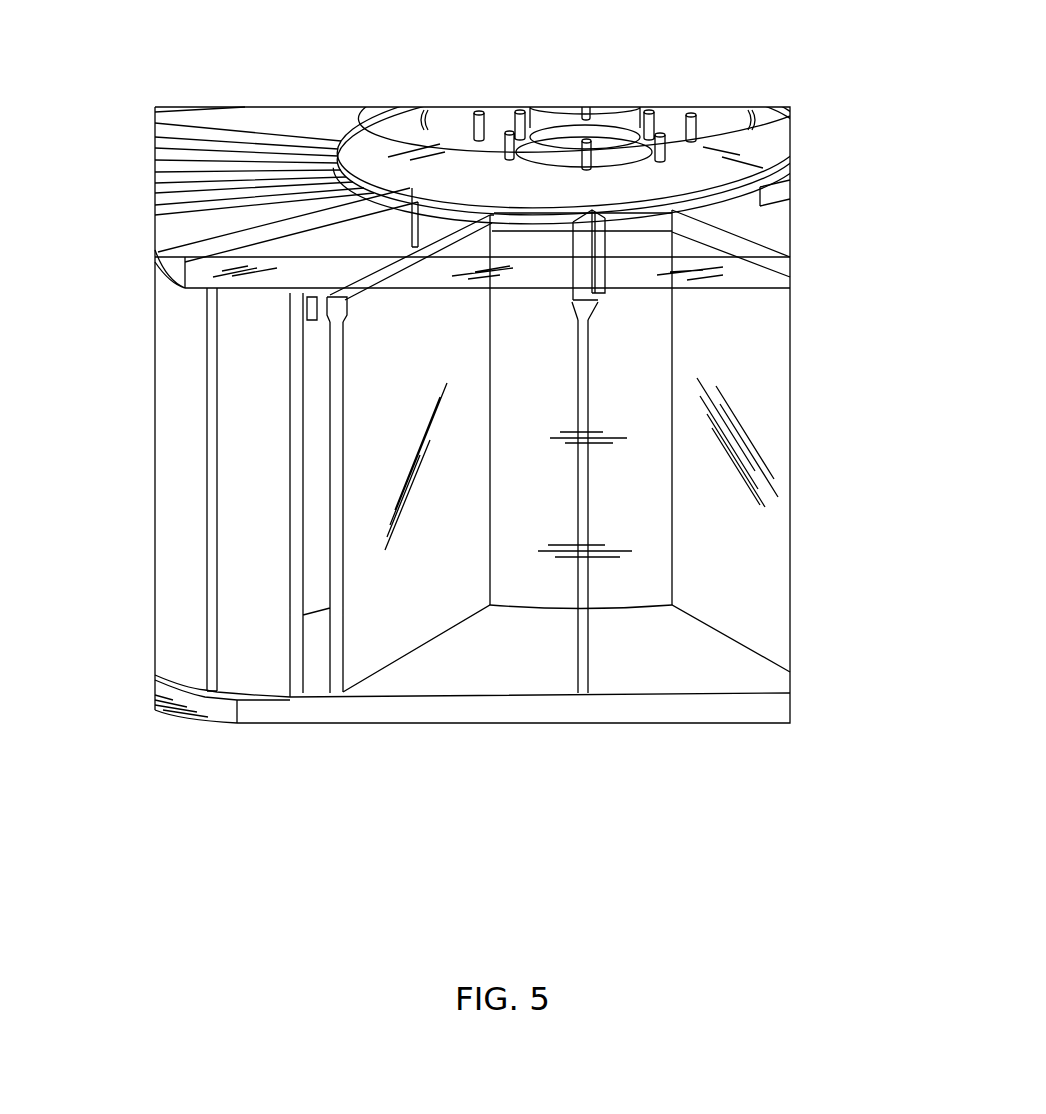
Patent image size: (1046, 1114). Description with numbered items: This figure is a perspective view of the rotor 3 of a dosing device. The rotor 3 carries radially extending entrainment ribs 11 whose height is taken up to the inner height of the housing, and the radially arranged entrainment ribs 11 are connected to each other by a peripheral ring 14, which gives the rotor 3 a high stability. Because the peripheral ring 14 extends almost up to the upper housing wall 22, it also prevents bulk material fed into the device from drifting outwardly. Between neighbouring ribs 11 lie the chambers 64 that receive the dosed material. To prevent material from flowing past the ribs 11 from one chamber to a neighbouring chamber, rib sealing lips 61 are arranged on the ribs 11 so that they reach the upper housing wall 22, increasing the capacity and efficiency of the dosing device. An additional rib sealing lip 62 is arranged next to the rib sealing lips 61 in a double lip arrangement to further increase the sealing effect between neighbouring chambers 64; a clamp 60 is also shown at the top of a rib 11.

The rotor 3 is at (807, 791).
The entrainment ribs 11 is at (772, 523).
The peripheral ring 14 is at (260, 587).
The upper housing wall 22 is at (778, 266).
The clamp 60 is at (310, 292).
The rib sealing lips 61 is at (586, 232).
The additional rib sealing lip 62 is at (598, 222).
The chambers 64 is at (217, 222).